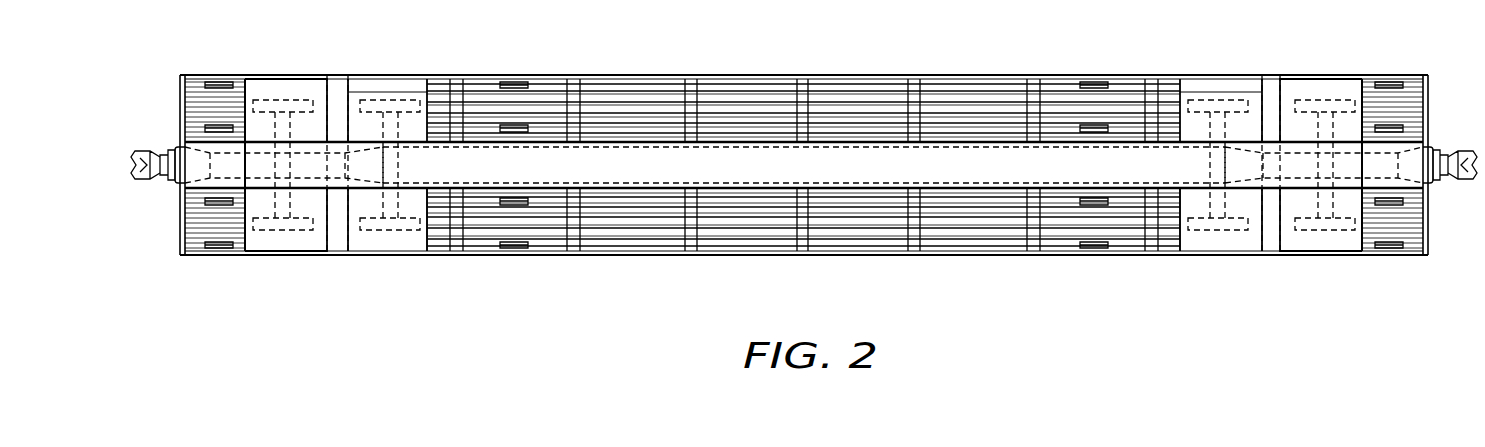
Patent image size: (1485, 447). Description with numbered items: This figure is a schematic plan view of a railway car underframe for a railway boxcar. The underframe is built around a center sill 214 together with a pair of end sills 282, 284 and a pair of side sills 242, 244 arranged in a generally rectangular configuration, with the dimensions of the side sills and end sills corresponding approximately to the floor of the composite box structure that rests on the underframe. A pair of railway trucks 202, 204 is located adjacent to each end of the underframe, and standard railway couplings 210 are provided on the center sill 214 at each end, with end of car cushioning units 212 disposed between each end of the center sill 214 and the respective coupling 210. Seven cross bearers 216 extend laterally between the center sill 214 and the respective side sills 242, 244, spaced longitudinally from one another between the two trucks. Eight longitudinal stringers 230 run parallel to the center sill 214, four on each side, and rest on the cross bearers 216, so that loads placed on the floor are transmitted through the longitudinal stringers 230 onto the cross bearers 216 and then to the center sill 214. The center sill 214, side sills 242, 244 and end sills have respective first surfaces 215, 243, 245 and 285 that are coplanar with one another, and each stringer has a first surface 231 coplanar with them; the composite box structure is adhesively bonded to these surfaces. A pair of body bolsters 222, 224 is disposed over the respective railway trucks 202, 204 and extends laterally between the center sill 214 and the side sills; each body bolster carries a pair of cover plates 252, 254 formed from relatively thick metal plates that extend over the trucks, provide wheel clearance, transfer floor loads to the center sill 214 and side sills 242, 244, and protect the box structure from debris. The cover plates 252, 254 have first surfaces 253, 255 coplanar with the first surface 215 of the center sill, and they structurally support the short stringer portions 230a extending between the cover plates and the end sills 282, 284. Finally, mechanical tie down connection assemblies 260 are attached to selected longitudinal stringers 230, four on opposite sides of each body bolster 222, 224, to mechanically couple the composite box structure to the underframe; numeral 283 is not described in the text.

The railway truck 202 is at (1322, 242).
The railway truck 204 is at (289, 242).
The railway coupling 210 is at (166, 150).
The end of car cushioning unit 212 is at (170, 185).
The center sill 214 is at (517, 182).
The first surface of center sill 215 is at (993, 174).
The cross bearer 216 is at (470, 84).
The body bolster 222 is at (1271, 75).
The body bolster 224 is at (337, 75).
The longitudinal stringer 230 is at (758, 117).
The portion of longitudinal stringer 230a is at (213, 120).
The first surface of longitudinal stringer 231 is at (625, 84).
The side sill 242 is at (721, 258).
The first surface of side sill 243 is at (700, 250).
The side sill 244 is at (721, 73).
The first surface of side sill 245 is at (668, 76).
The cover plate 252 is at (435, 250).
The first surface of cover plate 253 is at (400, 230).
The cover plate 254 is at (432, 95).
The first surface of cover plate 255 is at (410, 123).
The mechanical tie down connection assembly 260 is at (228, 124).
The end sill 282 is at (1430, 96).
The end plate 283 is at (1426, 233).
The end sill 284 is at (180, 92).
The first surface of end sill 285 is at (182, 233).